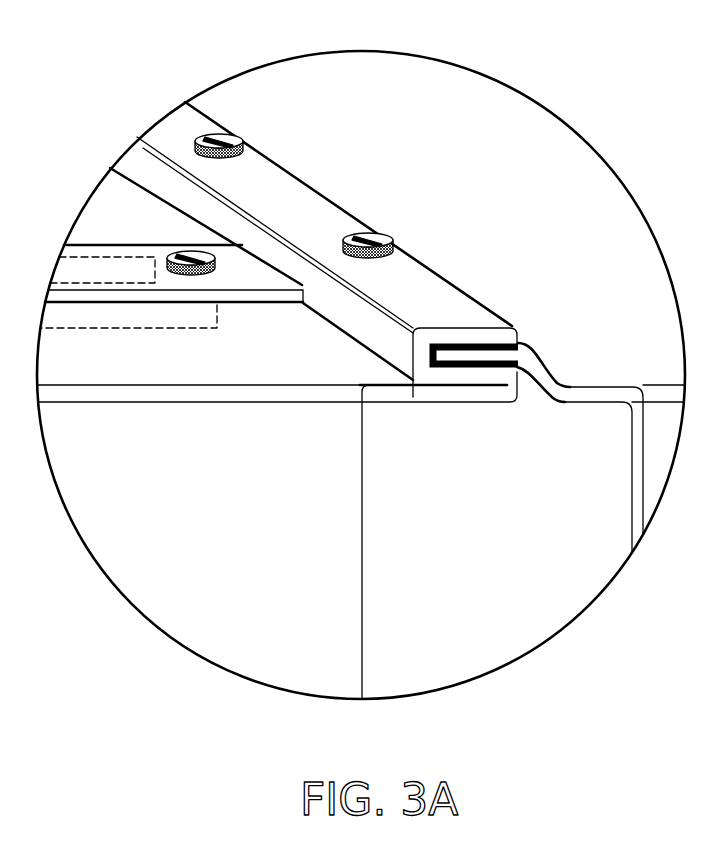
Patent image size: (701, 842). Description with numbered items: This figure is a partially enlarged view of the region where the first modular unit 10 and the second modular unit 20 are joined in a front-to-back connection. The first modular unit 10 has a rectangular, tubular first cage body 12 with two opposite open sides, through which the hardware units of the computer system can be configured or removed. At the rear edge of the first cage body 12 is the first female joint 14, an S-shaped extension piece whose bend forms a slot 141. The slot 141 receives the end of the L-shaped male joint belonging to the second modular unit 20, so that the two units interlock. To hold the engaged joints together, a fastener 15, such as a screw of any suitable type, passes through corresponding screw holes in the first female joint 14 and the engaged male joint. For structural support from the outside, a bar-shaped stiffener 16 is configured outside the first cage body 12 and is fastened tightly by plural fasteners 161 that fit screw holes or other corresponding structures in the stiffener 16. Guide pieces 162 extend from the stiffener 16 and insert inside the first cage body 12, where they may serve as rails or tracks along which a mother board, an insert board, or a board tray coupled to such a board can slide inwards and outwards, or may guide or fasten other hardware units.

The first modular unit 10 is at (445, 637).
The first cage body 12 is at (260, 655).
The first female joint 14 is at (330, 207).
The slot 141 is at (482, 343).
The fastener 15 is at (214, 134).
The stiffener 16 is at (83, 245).
The fastener 161 is at (175, 252).
The guide piece 162 is at (77, 268).
The second modular unit 20 is at (599, 465).